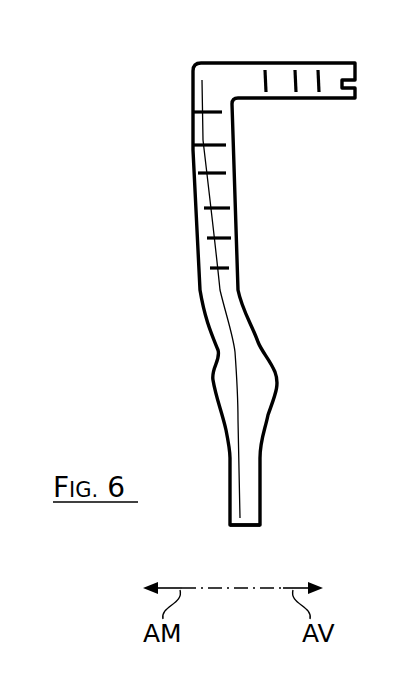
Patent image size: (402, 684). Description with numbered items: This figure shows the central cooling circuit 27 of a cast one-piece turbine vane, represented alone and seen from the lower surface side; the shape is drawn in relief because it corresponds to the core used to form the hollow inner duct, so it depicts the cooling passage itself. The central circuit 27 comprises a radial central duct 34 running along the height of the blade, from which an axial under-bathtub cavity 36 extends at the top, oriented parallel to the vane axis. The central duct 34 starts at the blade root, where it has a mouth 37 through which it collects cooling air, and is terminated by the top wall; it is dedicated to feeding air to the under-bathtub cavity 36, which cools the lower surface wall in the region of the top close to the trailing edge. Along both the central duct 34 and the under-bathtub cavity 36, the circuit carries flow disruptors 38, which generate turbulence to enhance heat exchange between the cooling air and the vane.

The central circuit 27 is at (158, 116).
The radial central duct 34 is at (200, 171).
The under-bathtub cavity 36 is at (285, 73).
The mouth 37 is at (243, 545).
The flow disruptors 38 is at (231, 238).